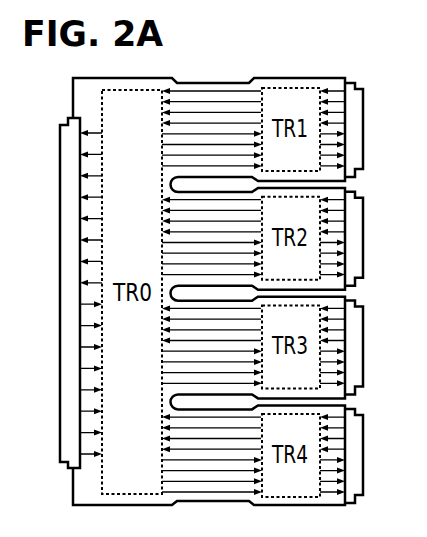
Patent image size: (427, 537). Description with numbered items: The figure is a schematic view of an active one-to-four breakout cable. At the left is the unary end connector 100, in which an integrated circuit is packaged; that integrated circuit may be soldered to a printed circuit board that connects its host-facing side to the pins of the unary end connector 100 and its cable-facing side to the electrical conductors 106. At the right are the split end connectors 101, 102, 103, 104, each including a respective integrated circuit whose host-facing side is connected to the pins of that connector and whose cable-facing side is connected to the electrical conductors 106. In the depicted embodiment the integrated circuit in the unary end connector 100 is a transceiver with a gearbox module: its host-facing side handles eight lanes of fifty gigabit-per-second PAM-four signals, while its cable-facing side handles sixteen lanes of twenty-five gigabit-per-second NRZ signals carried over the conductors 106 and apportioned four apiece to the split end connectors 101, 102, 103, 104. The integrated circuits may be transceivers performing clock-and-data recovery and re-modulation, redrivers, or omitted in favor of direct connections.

The unary end connector 100 is at (68, 118).
The split end connector 101 is at (352, 82).
The split end connector 102 is at (357, 191).
The split end connector 103 is at (357, 300).
The split end connector 104 is at (357, 409).
The electrical conductors 106 is at (252, 65).